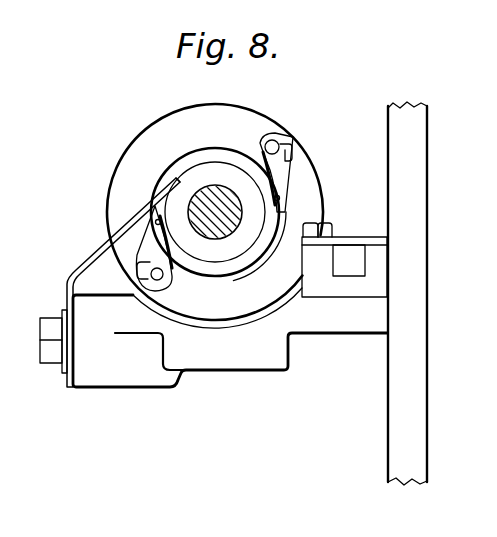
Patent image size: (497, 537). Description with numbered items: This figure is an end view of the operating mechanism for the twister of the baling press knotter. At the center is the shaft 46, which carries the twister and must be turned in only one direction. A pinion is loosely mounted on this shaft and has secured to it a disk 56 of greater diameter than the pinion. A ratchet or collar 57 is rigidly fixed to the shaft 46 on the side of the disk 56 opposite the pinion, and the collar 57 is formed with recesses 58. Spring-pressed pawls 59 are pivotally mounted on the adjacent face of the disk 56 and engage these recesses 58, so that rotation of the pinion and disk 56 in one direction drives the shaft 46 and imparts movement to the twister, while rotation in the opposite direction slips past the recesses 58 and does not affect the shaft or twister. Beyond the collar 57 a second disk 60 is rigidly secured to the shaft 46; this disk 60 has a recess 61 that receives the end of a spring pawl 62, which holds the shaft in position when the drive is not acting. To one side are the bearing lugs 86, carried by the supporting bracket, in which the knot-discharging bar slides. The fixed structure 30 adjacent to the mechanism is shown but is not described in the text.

The wall 30 is at (428, 105).
The shaft 46 is at (226, 228).
The disk 56 is at (155, 124).
The ratchet or collar 57 is at (197, 150).
The recesses 58 is at (162, 191).
The spring-pressed pawls 59 is at (291, 166).
The disk 60 is at (200, 250).
The recess 61 is at (178, 176).
The spring pawl 62 is at (82, 266).
The bearing lugs 86 is at (376, 252).